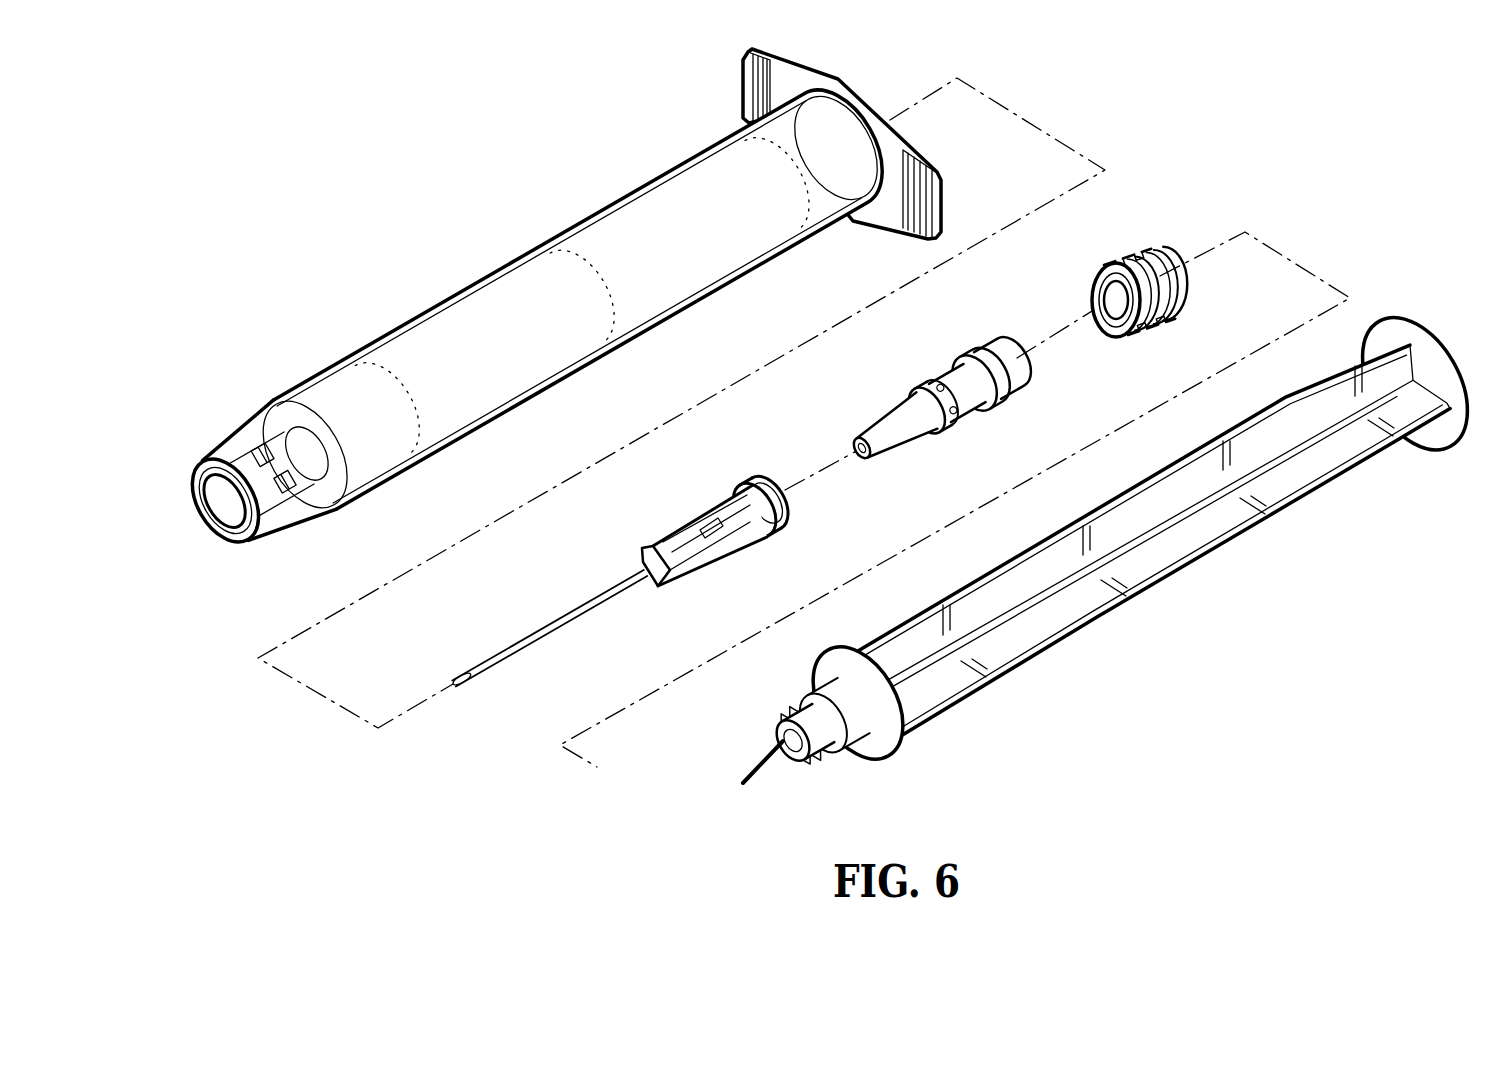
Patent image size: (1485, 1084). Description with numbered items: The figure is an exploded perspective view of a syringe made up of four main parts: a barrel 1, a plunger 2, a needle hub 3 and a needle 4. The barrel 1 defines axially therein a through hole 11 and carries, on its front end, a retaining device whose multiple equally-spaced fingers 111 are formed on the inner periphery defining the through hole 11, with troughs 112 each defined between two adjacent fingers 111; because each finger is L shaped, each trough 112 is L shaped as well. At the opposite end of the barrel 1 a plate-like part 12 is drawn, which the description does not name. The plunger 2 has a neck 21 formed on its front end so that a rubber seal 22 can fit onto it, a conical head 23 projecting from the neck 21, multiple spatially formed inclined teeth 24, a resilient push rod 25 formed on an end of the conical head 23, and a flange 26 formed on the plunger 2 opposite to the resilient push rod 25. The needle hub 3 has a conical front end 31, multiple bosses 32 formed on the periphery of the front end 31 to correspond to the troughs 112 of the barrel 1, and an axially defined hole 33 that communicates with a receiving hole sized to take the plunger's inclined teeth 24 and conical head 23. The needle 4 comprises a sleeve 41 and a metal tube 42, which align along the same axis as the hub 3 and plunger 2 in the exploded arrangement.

The barrel 1 is at (588, 208).
The through hole 11 is at (221, 512).
The fingers 111 is at (262, 455).
The troughs 112 is at (283, 484).
The flange of sleeve 12 is at (752, 80).
The plunger 2 is at (1107, 553).
The neck 21 is at (900, 748).
The rubber seal 22 is at (1122, 338).
The conical head 23 is at (790, 764).
The inclined teeth 24 is at (786, 719).
The resilient push rod 25 is at (764, 768).
The flange 26 is at (1442, 437).
The needle hub 3 is at (948, 422).
The conical front end 31 is at (905, 430).
The bosses 32 is at (939, 385).
The axially defined hole 33 is at (863, 459).
The needle 4 is at (623, 614).
The sleeve 41 is at (690, 556).
The metal tube 42 is at (518, 657).